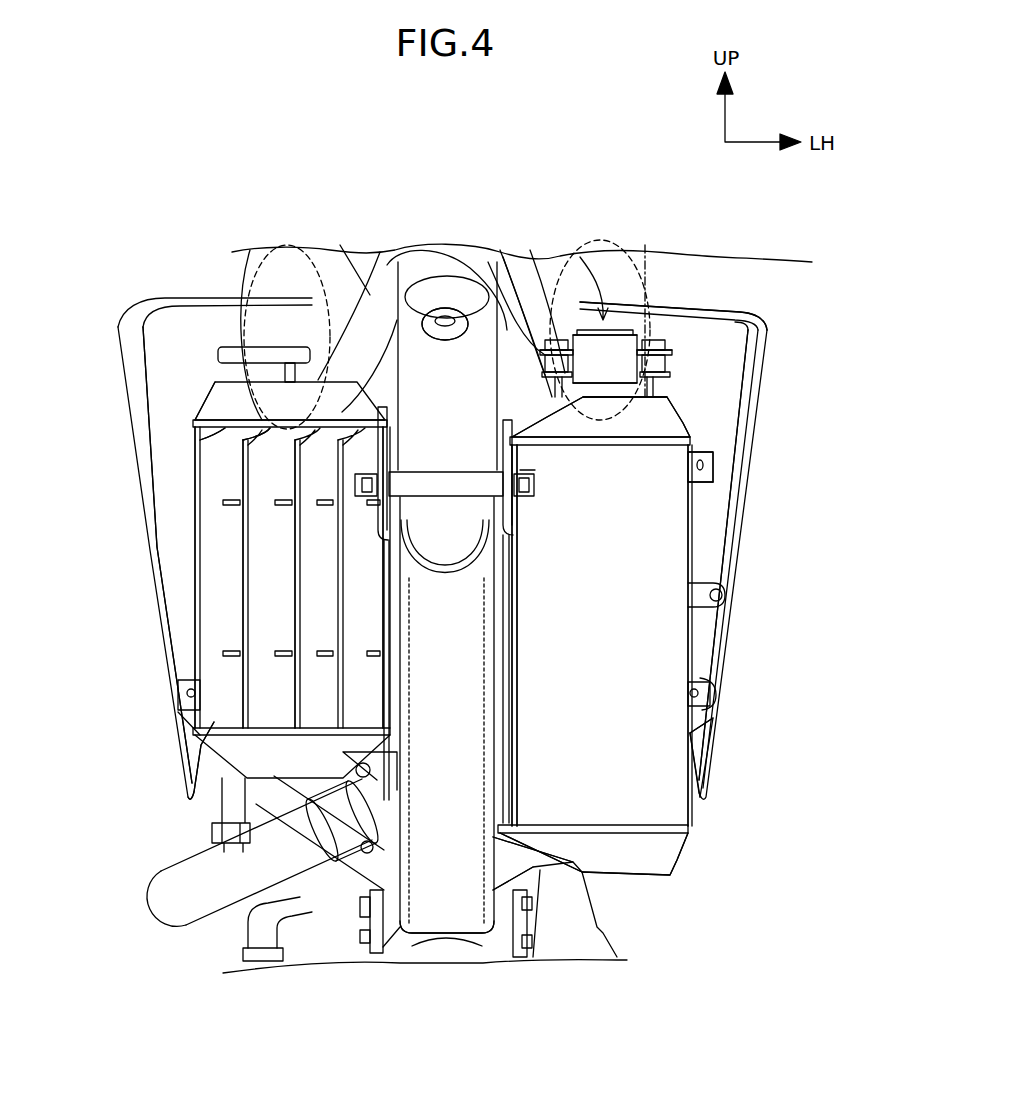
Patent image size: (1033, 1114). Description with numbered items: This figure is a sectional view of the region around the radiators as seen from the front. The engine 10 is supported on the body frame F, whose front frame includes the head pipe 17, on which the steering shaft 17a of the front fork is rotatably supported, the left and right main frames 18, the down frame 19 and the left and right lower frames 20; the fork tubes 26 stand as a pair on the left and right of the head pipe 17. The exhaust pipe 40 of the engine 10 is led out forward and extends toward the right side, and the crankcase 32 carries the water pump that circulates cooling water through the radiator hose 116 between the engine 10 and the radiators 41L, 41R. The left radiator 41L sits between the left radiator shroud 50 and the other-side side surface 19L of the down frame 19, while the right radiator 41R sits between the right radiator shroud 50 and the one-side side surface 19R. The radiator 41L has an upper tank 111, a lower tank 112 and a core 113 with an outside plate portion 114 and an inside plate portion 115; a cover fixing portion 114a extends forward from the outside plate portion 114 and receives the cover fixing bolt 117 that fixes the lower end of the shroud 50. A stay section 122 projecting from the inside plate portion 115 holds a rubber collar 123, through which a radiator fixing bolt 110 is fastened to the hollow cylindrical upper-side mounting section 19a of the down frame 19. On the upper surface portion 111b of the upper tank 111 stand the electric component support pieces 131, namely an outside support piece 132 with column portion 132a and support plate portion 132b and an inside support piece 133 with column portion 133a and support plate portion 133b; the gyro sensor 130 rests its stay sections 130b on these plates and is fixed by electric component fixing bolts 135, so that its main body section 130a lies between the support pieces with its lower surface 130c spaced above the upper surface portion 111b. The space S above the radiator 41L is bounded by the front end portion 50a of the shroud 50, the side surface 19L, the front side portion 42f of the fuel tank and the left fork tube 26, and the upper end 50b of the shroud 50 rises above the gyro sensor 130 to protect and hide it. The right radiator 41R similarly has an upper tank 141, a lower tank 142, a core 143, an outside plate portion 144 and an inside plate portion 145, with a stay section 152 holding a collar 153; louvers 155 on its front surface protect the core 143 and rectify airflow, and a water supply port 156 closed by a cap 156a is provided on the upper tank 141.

The engine 10 is at (330, 970).
The head pipe 17 is at (455, 282).
The steering shaft 17a is at (433, 305).
The main frames 18 is at (350, 258).
The down frame 19 is at (446, 921).
The one-side side surface 19R is at (385, 645).
The other-side side surface 19L is at (510, 643).
The upper-side mounting section 19a is at (725, 590).
The lower frames 20 is at (380, 955).
The fork tubes 26 is at (303, 258).
The crankcase 32 is at (333, 935).
The exhaust pipe 40 is at (158, 905).
The radiator 41R is at (271, 798).
The radiator 41L is at (665, 889).
The front side portion 42f is at (610, 300).
The radiator shroud 50 is at (125, 380).
The front end portion 50a is at (765, 423).
The upper end 50b is at (733, 310).
The radiator fixing bolts 110 is at (363, 487).
The upper tank 111 is at (680, 405).
The upper surface portion 111b is at (675, 397).
The lower tank 112 is at (670, 870).
The core 113 is at (700, 760).
The outside plate portion 114 is at (690, 635).
The cover fixing portion 114a is at (703, 712).
The inside plate portion 115 is at (510, 588).
The radiator hose 116 is at (545, 873).
The cover fixing bolt 117 is at (714, 693).
The stay section 122 is at (512, 500).
The collar 123 is at (512, 463).
The gyro sensor 130 is at (640, 330).
The main body section 130a is at (665, 338).
The stay sections 130b is at (555, 335).
The lower surface 130c is at (640, 345).
The electric component support pieces 131 is at (822, 452).
The outside support piece 132 is at (713, 460).
The column portion 132a is at (655, 392).
The support plate portion 132b is at (668, 365).
The inside support piece 133 is at (713, 473).
The column portion 133a is at (480, 267).
The support plate portion 133b is at (489, 262).
The electric component fixing bolts 135 is at (580, 330).
The upper tank 141 is at (143, 327).
The lower tank 142 is at (213, 763).
The core 143 is at (360, 452).
The outside plate portion 144 is at (197, 580).
The inside plate portion 145 is at (385, 612).
The stay section 152 is at (340, 537).
The collar 153 is at (383, 513).
The louvers 155 is at (180, 722).
The water supply port 156 is at (235, 347).
The cap 156a is at (225, 400).
The space S is at (645, 245).
The body frame F is at (480, 972).